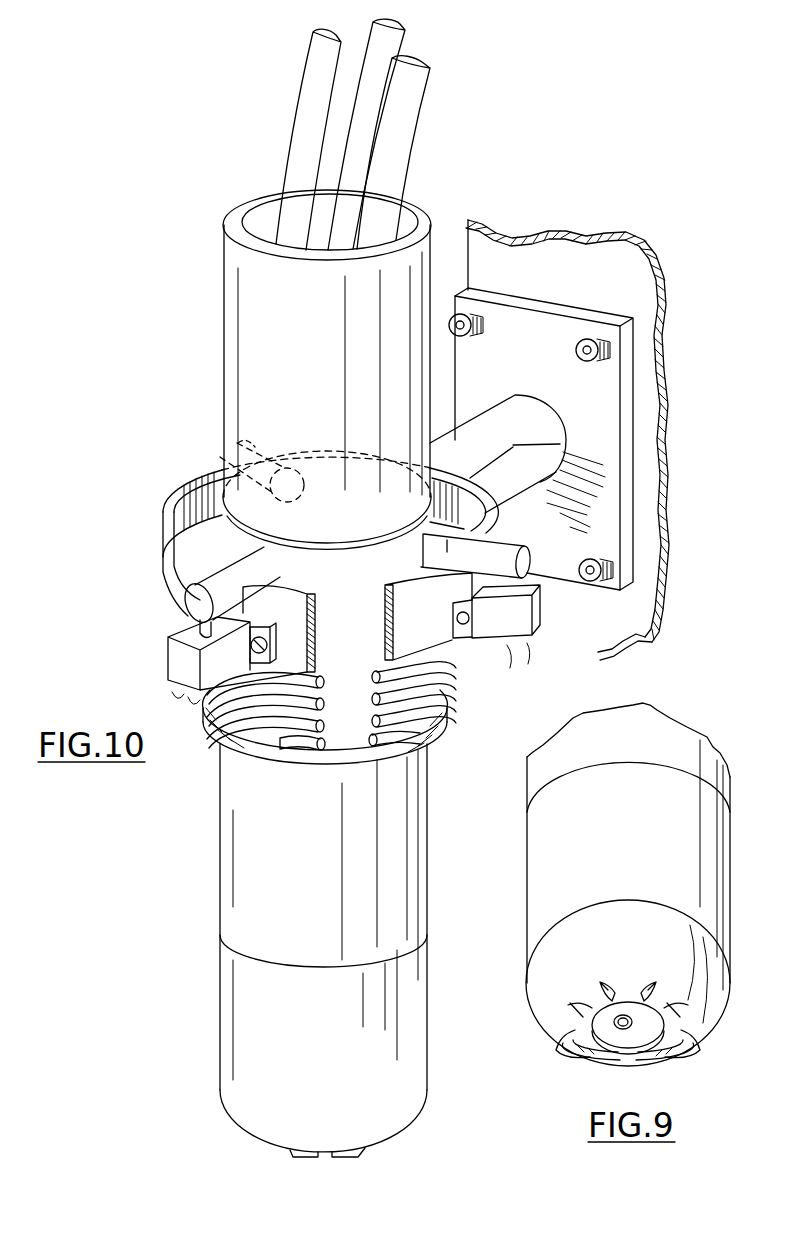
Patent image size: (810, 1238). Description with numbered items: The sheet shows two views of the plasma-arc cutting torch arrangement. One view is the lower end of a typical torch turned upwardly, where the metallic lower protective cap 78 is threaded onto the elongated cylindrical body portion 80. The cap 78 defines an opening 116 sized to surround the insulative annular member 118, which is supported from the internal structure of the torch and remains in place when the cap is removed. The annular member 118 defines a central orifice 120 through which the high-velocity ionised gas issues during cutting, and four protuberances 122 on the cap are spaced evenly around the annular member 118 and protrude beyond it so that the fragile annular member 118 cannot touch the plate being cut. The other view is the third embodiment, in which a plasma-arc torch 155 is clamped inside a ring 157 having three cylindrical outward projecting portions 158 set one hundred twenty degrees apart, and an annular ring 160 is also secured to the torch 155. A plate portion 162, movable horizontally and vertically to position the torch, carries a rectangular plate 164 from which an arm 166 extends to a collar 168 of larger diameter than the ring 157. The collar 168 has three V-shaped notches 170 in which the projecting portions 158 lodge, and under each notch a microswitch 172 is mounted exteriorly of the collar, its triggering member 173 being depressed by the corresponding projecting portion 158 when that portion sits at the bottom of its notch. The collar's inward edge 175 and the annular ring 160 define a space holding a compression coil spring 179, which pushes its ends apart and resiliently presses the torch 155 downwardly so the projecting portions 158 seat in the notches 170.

In FIG. 9, the lower protective cap 78 is at (530, 873).
In FIG. 9, the body portion 80 is at (530, 780).
In FIG. 9, the opening 116 is at (610, 997).
In FIG. 9, the insulative annular member 118 is at (647, 1005).
In FIG. 9, the central orifice 120 is at (625, 1027).
In FIG. 9, the protuberances 122 is at (578, 1047).
In FIG. 10, the plasma-arc torch 155 is at (248, 832).
In FIG. 10, the ring 157 is at (177, 527).
In FIG. 10, the projecting portions 158 is at (240, 447).
In FIG. 10, the annular ring 160 is at (247, 740).
In FIG. 10, the plate portion 162 is at (541, 258).
In FIG. 10, the rectangular plate 164 is at (605, 405).
In FIG. 10, the arm 166 is at (590, 447).
In FIG. 10, the collar 168 is at (172, 570).
In FIG. 10, the V-shaped notches 170 is at (285, 466).
In FIG. 10, the microswitch 172 is at (188, 664).
In FIG. 10, the triggering member 173 is at (233, 618).
In FIG. 10, the inward edge 175 is at (317, 636).
In FIG. 10, the compression coil spring 179 is at (440, 703).